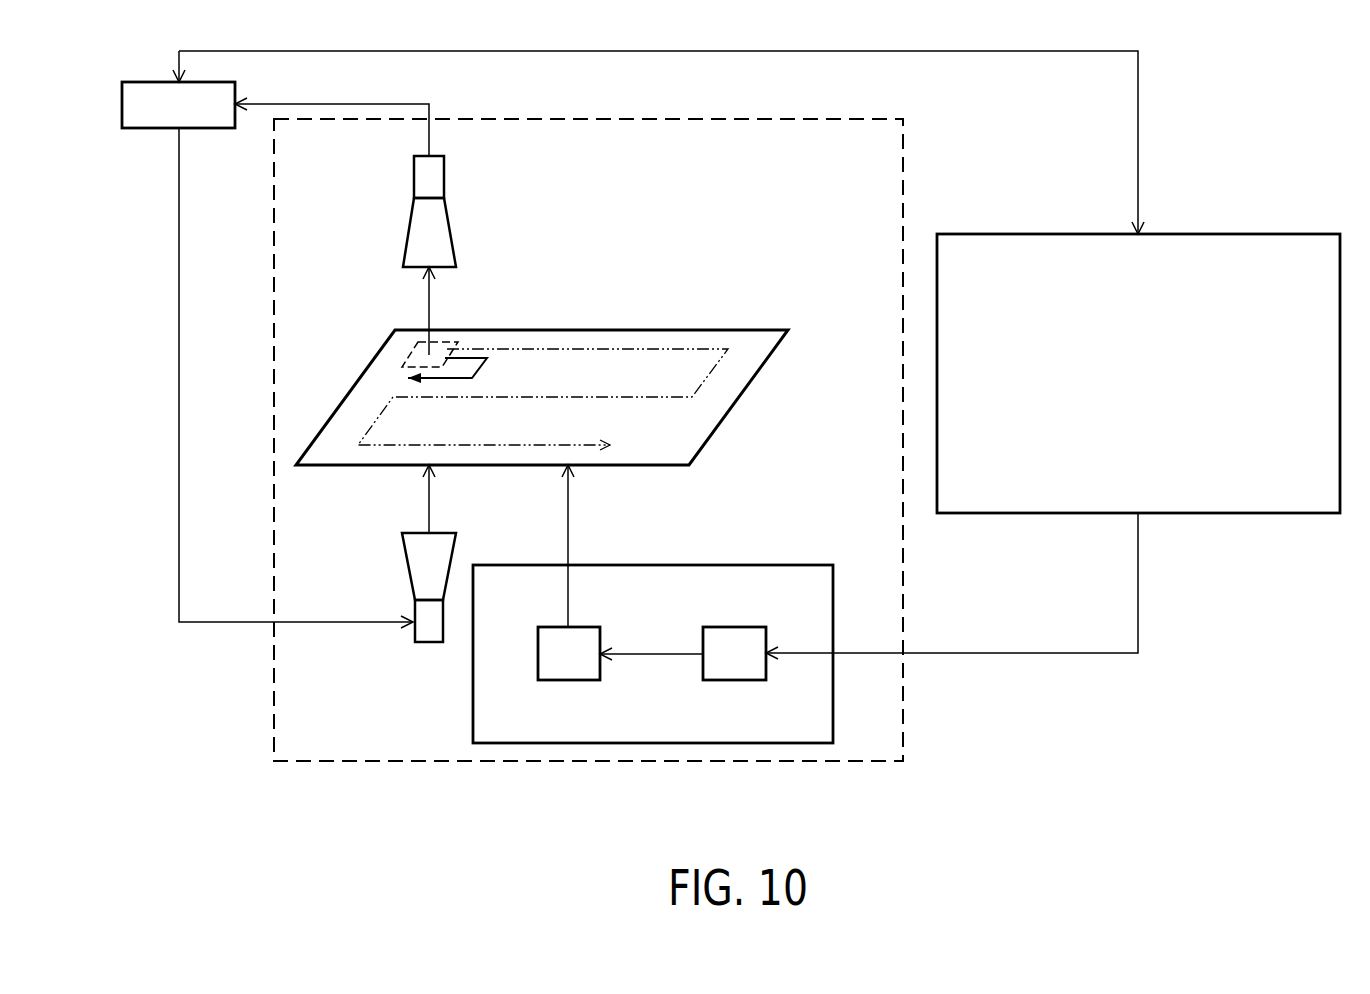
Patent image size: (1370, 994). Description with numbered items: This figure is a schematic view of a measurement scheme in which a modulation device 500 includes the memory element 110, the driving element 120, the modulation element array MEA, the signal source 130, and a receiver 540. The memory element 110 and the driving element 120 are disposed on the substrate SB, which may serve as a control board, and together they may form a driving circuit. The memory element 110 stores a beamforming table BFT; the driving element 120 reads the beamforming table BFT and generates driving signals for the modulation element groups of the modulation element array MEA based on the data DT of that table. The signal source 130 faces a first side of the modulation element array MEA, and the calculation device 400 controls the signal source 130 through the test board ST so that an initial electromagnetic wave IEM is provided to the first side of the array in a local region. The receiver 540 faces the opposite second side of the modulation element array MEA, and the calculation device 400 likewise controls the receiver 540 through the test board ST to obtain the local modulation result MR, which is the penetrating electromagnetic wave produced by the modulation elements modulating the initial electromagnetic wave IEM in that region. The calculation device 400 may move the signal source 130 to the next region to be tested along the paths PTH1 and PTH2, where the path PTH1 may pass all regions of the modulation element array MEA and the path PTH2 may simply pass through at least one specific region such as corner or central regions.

The modulation device 500 is at (827, 118).
The receiver 540 is at (440, 268).
The signal source 130 is at (442, 532).
The driving element 120 is at (583, 625).
The memory element 110 is at (750, 625).
The calculation device 400 is at (1265, 233).
The test board ST is at (160, 80).
The modulation element array MEA is at (707, 330).
The substrate SB is at (773, 563).
The path PTH1 is at (706, 378).
The path PTH2 is at (487, 362).
The local modulation result MR is at (406, 311).
The initial electromagnetic wave IEM is at (403, 499).
The data DT is at (651, 641).
The beamforming table BFT is at (952, 586).